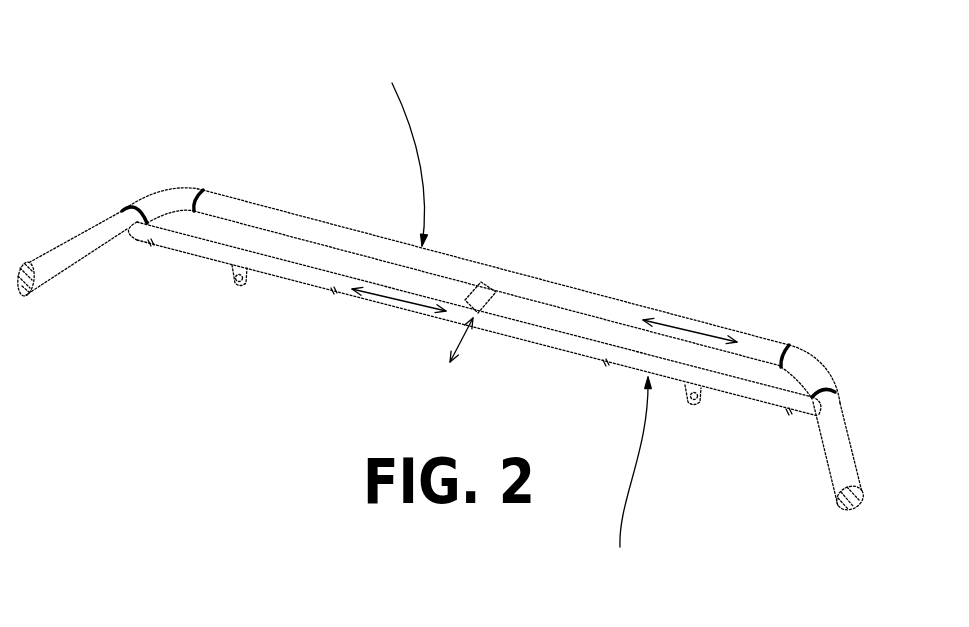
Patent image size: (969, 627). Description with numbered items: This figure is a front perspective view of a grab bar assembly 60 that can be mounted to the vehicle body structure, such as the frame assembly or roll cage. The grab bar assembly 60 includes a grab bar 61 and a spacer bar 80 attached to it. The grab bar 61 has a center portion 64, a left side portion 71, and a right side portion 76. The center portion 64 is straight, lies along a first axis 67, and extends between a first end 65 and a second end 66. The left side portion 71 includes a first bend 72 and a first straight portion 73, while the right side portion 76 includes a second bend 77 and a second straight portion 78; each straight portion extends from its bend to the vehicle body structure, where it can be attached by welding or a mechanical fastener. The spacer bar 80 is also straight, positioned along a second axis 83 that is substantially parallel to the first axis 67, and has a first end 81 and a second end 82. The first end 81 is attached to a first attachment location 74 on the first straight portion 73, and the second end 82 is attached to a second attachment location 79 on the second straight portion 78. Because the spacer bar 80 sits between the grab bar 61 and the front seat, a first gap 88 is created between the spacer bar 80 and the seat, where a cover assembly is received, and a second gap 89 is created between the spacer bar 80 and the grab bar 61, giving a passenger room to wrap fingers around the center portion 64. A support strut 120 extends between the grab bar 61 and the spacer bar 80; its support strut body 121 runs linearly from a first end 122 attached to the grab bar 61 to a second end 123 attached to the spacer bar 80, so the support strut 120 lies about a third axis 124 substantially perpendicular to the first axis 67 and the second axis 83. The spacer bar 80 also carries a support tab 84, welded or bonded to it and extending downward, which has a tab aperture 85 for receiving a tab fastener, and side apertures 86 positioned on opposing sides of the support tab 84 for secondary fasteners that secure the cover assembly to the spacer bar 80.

The grab bar assembly 60 is at (408, 53).
The grab bar 61 is at (406, 152).
The center portion 64 is at (357, 240).
The first end 65 is at (778, 345).
The second end 66 is at (203, 203).
The first axis 67 is at (690, 325).
The left side portion 71 is at (853, 300).
The first bend 72 is at (818, 365).
The first straight portion 73 is at (842, 407).
The first attachment location 74 is at (820, 415).
The right side portion 76 is at (150, 112).
The second bend 77 is at (153, 200).
The second straight portion 78 is at (88, 234).
The second attachment location 79 is at (124, 224).
The spacer bar 80 is at (634, 476).
The first end 81 is at (810, 413).
The second end 82 is at (130, 230).
The second axis 83 is at (383, 299).
The support tab 84 is at (248, 273).
The tab aperture 85 is at (244, 283).
The side apertures 86 is at (152, 240).
The first gap 88 is at (293, 287).
The second gap 89 is at (273, 242).
The support strut 120 is at (495, 120).
The support strut body 121 is at (475, 293).
The first end 122 is at (487, 282).
The second end 123 is at (488, 307).
The third axis 124 is at (465, 353).